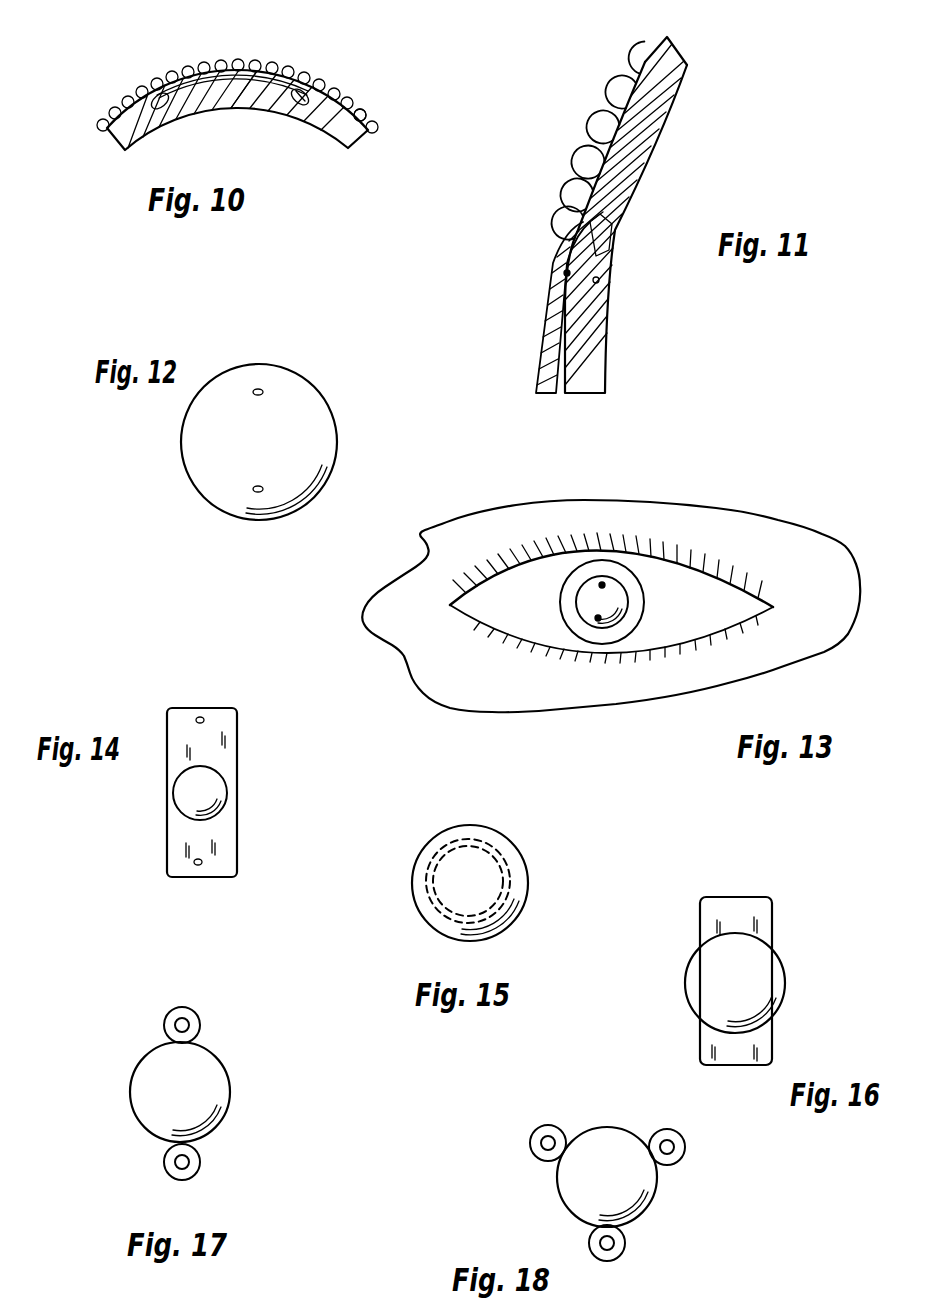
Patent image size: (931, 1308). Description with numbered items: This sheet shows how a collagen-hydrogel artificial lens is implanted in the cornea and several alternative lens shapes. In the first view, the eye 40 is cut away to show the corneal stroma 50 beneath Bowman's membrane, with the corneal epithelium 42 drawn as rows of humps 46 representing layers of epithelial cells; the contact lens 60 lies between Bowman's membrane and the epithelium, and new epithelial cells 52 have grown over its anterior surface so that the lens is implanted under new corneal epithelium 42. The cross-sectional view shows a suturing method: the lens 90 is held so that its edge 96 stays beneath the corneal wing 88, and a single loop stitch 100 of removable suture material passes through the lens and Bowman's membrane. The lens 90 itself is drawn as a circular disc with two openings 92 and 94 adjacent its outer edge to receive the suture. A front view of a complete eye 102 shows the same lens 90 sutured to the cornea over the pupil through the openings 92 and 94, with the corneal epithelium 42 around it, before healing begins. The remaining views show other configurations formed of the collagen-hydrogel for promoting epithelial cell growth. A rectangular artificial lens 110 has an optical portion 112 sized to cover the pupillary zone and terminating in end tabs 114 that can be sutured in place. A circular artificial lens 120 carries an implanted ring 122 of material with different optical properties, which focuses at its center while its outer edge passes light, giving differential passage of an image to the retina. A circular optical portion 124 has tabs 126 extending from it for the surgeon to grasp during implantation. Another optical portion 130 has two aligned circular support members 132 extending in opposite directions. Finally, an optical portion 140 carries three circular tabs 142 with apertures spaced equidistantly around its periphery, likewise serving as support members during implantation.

In FIG. 10, the eye 40 is at (345, 150).
In FIG. 11, the eye 40 is at (668, 93).
In FIG. 10, the corneal epithelium 42 is at (356, 126).
In FIG. 11, the corneal epithelium 42 is at (597, 112).
In FIG. 13, the corneal epithelium 42 is at (641, 606).
In FIG. 10, the humps 46 is at (139, 119).
In FIG. 10, the corneal stroma 50 is at (277, 114).
In FIG. 11, the corneal stroma 50 is at (607, 342).
In FIG. 10, the new epithelial cells 52 is at (258, 72).
In FIG. 10, the contact lens 60 is at (302, 90).
In FIG. 11, the corneal wing 88 is at (596, 221).
In FIG. 11, the lens 90 is at (540, 352).
In FIG. 12, the lens 90 is at (338, 433).
In FIG. 13, the lens 90 is at (628, 622).
In FIG. 11, the opening 92 is at (565, 273).
In FIG. 12, the opening 92 is at (266, 390).
In FIG. 13, the opening 92 is at (604, 584).
In FIG. 12, the opening 94 is at (264, 491).
In FIG. 11, the edge 96 is at (613, 243).
In FIG. 11, the single loop stitch 100 is at (599, 281).
In FIG. 13, the eye patch 102 is at (778, 580).
In FIG. 14, the artificial lens 110 is at (238, 785).
In FIG. 14, the optical portion 112 is at (227, 798).
In FIG. 14, the end tabs 114 is at (229, 733).
In FIG. 15, the circular shaped artificial lens 120 is at (526, 888).
In FIG. 15, the ring 122 is at (506, 867).
In FIG. 16, the optical portion 124 is at (785, 977).
In FIG. 16, the tabs 126 is at (768, 920).
In FIG. 17, the optical portion 130 is at (232, 1091).
In FIG. 17, the circular support members 132 is at (200, 1023).
In FIG. 18, the optical portion 140 is at (658, 1183).
In FIG. 18, the circular tabs 142 is at (653, 1136).